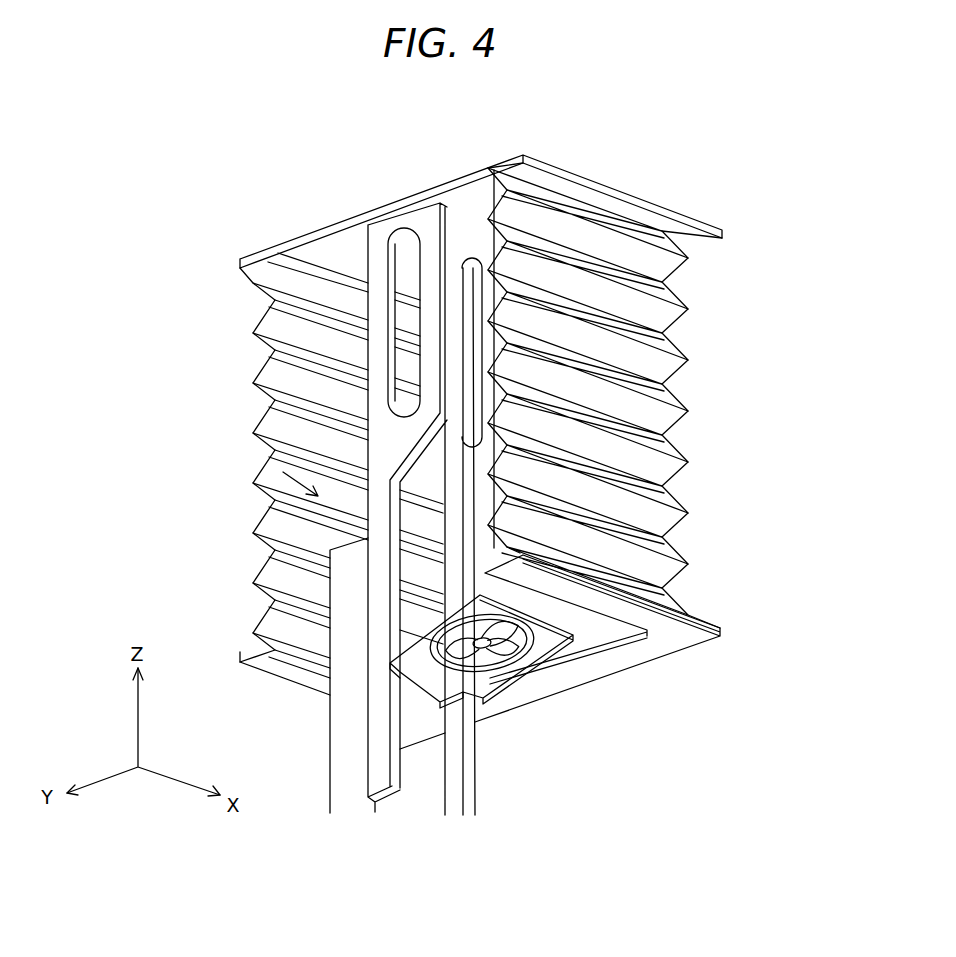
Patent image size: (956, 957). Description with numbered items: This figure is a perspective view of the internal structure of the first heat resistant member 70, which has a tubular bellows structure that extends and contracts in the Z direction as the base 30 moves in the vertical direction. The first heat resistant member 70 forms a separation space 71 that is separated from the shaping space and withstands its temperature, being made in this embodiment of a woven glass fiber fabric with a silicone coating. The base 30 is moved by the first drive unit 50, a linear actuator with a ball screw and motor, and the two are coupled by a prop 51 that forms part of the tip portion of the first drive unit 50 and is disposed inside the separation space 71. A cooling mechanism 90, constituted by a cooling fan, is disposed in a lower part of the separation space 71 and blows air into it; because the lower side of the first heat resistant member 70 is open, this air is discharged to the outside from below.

The base 30 is at (345, 214).
The first heat resistant member 70 is at (627, 356).
The prop 51 is at (385, 452).
The separation space 71 is at (283, 470).
The first drive unit 50 is at (352, 647).
The cooling mechanism 90 is at (535, 653).